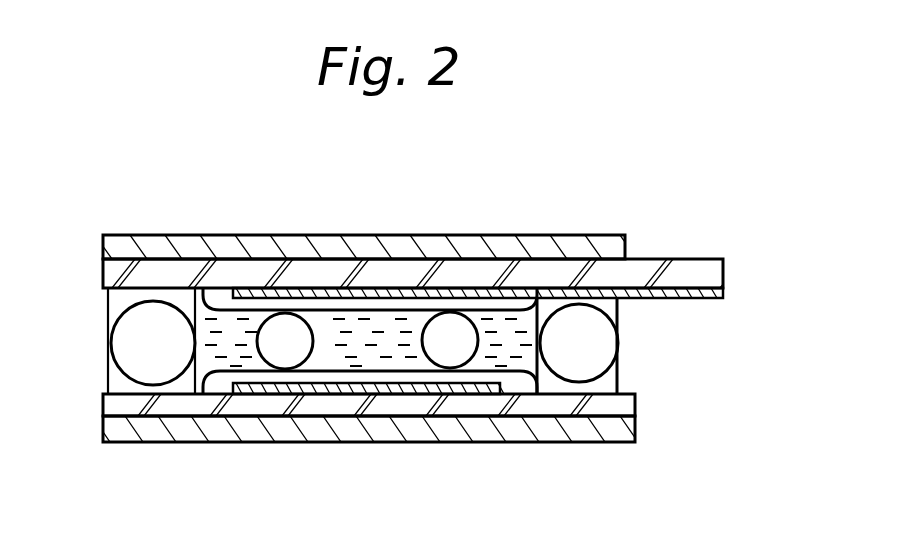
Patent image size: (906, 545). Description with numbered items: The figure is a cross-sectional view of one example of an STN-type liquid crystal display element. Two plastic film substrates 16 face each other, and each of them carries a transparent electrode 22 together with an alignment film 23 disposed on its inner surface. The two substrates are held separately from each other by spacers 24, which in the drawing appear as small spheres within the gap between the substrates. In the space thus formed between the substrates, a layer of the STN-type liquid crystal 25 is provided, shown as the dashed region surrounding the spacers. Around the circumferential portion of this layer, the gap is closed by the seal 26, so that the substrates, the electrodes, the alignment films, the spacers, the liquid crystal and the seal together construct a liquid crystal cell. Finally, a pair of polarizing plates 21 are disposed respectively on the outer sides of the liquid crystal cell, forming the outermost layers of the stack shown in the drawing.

The plastic film substrate 16 is at (715, 269).
The polarizing plate 21 is at (627, 241).
The transparent electrode 22 is at (713, 297).
The alignment film 23 is at (219, 293).
The spacer 24 is at (445, 323).
The STN-type liquid crystal 25 is at (376, 347).
The seal 26 is at (620, 310).